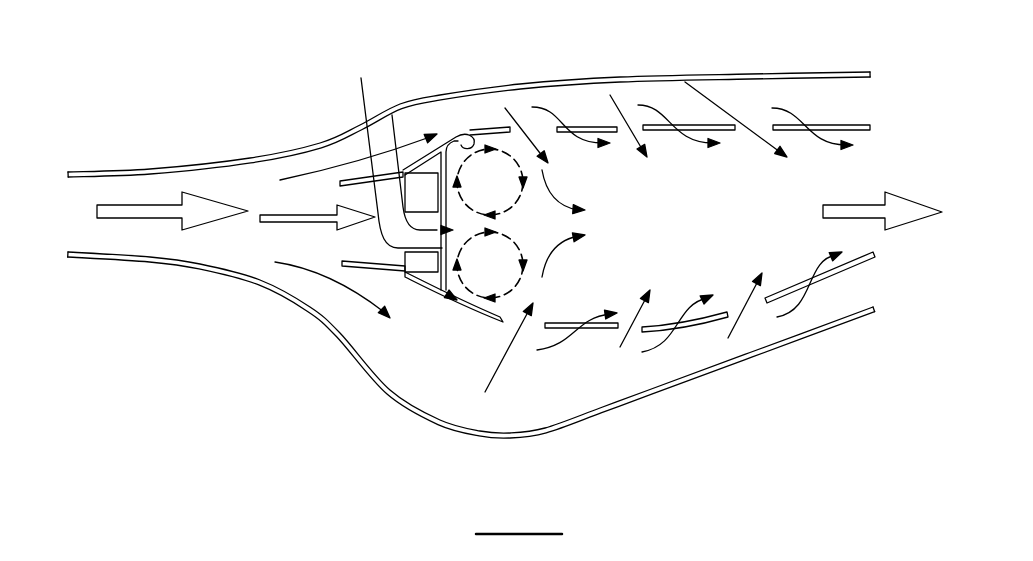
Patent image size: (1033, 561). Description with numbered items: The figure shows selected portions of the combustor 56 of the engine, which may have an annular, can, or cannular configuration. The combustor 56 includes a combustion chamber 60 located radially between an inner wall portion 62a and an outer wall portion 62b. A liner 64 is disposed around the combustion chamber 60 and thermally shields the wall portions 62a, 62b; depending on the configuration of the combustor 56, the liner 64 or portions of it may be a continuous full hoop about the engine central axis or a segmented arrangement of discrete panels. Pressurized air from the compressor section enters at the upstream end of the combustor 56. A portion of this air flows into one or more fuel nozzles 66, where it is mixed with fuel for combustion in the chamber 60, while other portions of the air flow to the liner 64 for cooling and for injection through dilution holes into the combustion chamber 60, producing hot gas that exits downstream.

The combustor 56 is at (300, 424).
The combustion chamber 60 is at (690, 203).
The inner wall portion 62a is at (655, 392).
The outer wall portion 62b is at (622, 73).
The liner 64 is at (473, 150).
The fuel nozzle 66 is at (423, 265).